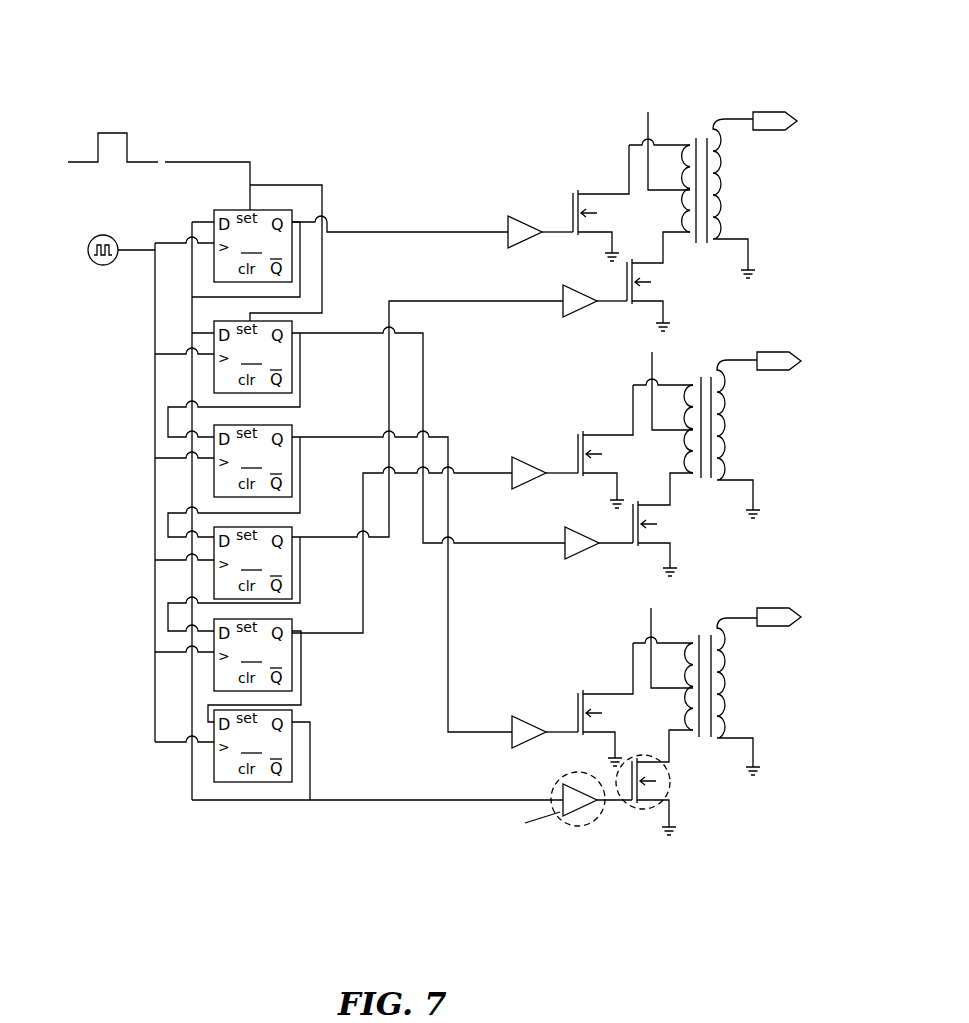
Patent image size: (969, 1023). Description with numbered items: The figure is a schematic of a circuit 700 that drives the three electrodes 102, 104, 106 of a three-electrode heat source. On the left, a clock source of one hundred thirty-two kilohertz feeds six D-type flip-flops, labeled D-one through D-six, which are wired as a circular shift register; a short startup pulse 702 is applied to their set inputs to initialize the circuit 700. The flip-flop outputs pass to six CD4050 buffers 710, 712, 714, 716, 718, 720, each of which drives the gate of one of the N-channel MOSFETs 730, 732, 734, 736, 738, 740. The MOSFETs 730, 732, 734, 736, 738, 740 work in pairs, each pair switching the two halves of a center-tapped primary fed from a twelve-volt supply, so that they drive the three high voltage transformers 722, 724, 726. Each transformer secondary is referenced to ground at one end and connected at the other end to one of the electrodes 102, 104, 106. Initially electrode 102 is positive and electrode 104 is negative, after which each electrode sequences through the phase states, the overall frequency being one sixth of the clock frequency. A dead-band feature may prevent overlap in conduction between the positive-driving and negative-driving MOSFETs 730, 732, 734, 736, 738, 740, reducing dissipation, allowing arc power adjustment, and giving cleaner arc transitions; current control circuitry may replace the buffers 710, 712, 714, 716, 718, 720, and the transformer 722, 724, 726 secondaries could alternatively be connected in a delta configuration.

The circuit 700 is at (432, 108).
The startup pulse 702 is at (98, 163).
The CD4050 buffer 710 is at (512, 219).
The CD4050 buffer 712 is at (570, 295).
The CD4050 buffer 714 is at (522, 462).
The CD4050 buffer 716 is at (570, 535).
The CD4050 buffer 718 is at (515, 718).
The CD4050 buffer 720 is at (567, 792).
The MOSFET 730 is at (580, 203).
The MOSFET 732 is at (637, 281).
The MOSFET 734 is at (586, 446).
The MOSFET 736 is at (640, 524).
The MOSFET 738 is at (586, 704).
The MOSFET 740 is at (654, 782).
The high voltage transformer 722 is at (718, 198).
The high voltage transformer 724 is at (722, 439).
The high voltage transformer 726 is at (722, 696).
The electrode 102 is at (785, 130).
The electrode 104 is at (788, 370).
The electrode 106 is at (788, 627).